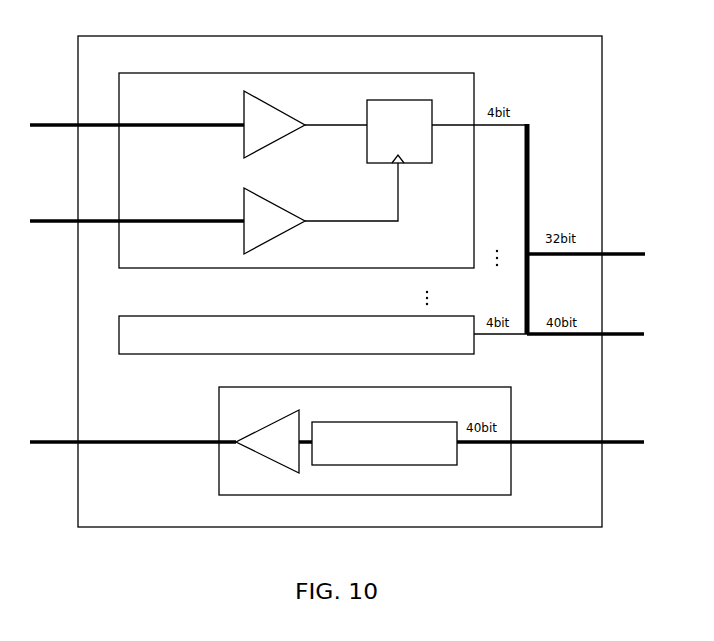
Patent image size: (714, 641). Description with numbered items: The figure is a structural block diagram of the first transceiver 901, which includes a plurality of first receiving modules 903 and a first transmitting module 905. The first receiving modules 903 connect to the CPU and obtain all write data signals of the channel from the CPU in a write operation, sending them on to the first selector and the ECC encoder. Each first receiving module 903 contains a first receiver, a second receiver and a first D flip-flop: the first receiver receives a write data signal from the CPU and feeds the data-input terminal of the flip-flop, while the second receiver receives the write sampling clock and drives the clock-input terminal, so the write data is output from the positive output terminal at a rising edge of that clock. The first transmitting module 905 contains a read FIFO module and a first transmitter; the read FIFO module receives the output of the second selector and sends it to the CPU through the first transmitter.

The first transceiver 901 is at (494, 36).
The first receiving module 903 is at (298, 72).
The first transmitting module 905 is at (516, 412).